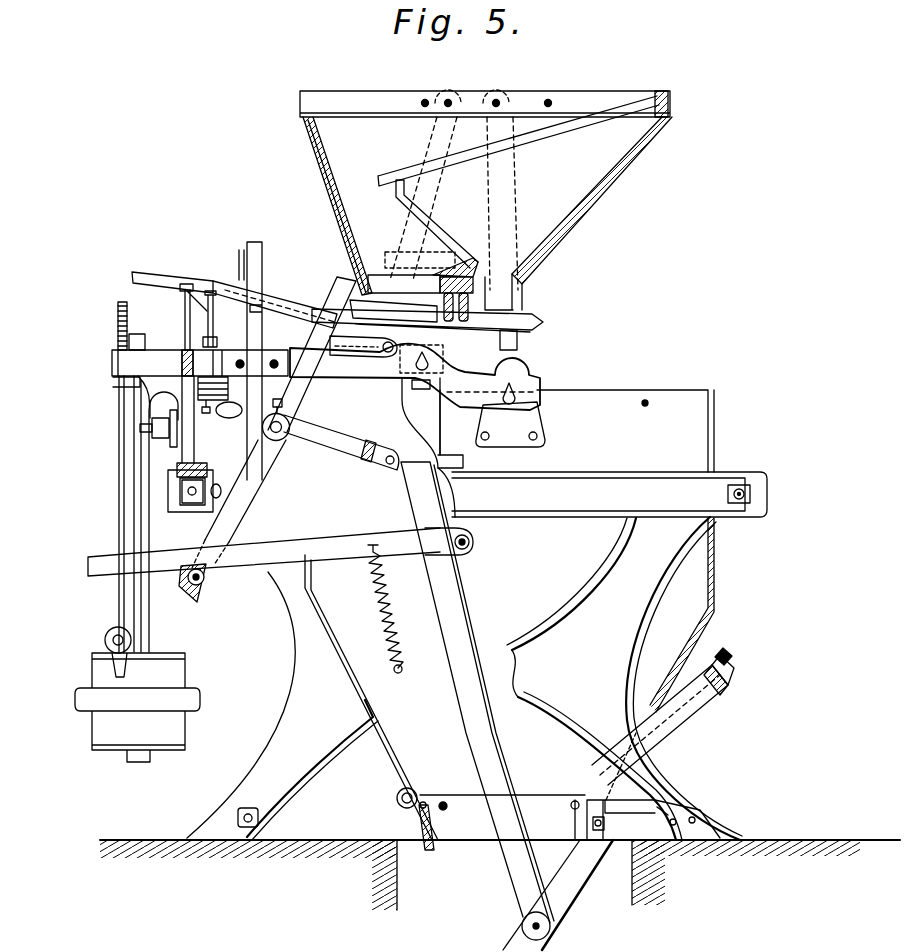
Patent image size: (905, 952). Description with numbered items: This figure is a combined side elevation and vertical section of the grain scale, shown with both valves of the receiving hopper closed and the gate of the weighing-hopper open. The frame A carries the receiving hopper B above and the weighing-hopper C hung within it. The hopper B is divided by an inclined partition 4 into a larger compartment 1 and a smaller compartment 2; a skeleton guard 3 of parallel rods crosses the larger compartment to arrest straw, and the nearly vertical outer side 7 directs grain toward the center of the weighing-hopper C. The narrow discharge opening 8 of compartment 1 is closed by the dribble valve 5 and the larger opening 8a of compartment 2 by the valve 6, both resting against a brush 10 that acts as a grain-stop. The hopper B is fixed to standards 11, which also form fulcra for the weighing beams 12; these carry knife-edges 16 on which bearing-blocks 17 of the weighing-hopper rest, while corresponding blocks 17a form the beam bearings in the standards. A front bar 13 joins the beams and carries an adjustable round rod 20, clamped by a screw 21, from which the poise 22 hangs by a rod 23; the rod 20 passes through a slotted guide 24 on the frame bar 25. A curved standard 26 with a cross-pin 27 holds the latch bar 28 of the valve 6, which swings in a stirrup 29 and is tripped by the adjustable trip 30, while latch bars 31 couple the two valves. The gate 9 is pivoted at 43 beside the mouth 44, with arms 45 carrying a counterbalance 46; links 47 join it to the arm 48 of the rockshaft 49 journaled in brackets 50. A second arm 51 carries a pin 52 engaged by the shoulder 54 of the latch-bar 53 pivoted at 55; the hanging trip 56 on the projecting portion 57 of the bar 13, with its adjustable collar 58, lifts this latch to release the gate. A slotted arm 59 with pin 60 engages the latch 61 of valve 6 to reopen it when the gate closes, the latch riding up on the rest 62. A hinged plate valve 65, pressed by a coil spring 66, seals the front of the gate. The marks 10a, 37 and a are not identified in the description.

The larger compartment 1 is at (505, 203).
The smaller compartment 2 is at (403, 246).
The skeleton guard 3 is at (488, 155).
The partition 4 is at (427, 225).
The valve 5 is at (433, 329).
The valve 6 is at (393, 311).
The outer side 7 is at (333, 204).
The discharge opening 8 is at (500, 291).
The discharge opening 8a is at (395, 282).
The discharge gate 9 is at (573, 887).
The brush 10 is at (437, 338).
The pin 10a is at (460, 351).
The standards 11 is at (395, 417).
The weighing beams 12 is at (415, 377).
The front bar 13 is at (220, 383).
The knife-edge 16 is at (517, 395).
The bearing-block 17 is at (510, 424).
The bearing-block 17a is at (379, 420).
The forward extension rod 20 is at (157, 376).
The screw 21 is at (205, 414).
The poise 22 is at (137, 707).
The rod 23 is at (135, 413).
The slotted guide 24 is at (190, 448).
The frame bar 25 is at (187, 510).
The curved standard 26 is at (256, 243).
The cross-pin 27 is at (210, 291).
The latch bar 28 is at (240, 276).
The stirrup 29 is at (430, 139).
The trip device 30 is at (172, 272).
The latch bars 31 is at (135, 271).
The loop 37 is at (159, 419).
The pivot 43 is at (606, 822).
The mouth 44 is at (500, 852).
The arms 45 is at (686, 713).
The counterbalance weight 46 is at (716, 678).
The links 47 is at (462, 642).
The arm 48 is at (366, 462).
The rockshaft 49 is at (290, 424).
The brackets 50 is at (284, 405).
The arm 51 is at (247, 495).
The cross-pin 52 is at (205, 576).
The latch-bar 53 is at (264, 552).
The shoulder 54 is at (371, 697).
The pivot 55 is at (472, 540).
The hanging trip 56 is at (119, 325).
The forwardly projecting portion 57 is at (117, 350).
The collar 58 is at (129, 636).
The slotted lever arm 59 is at (343, 280).
The cross-pin 60 is at (364, 340).
The latch bar 61 is at (286, 289).
The rest 62 is at (184, 299).
The valve 65 is at (424, 828).
The coil spring 66 is at (401, 803).
The frame A is at (743, 470).
The receiving hopper B is at (316, 157).
The weighing-hopper C is at (464, 615).
The bracket a is at (111, 385).